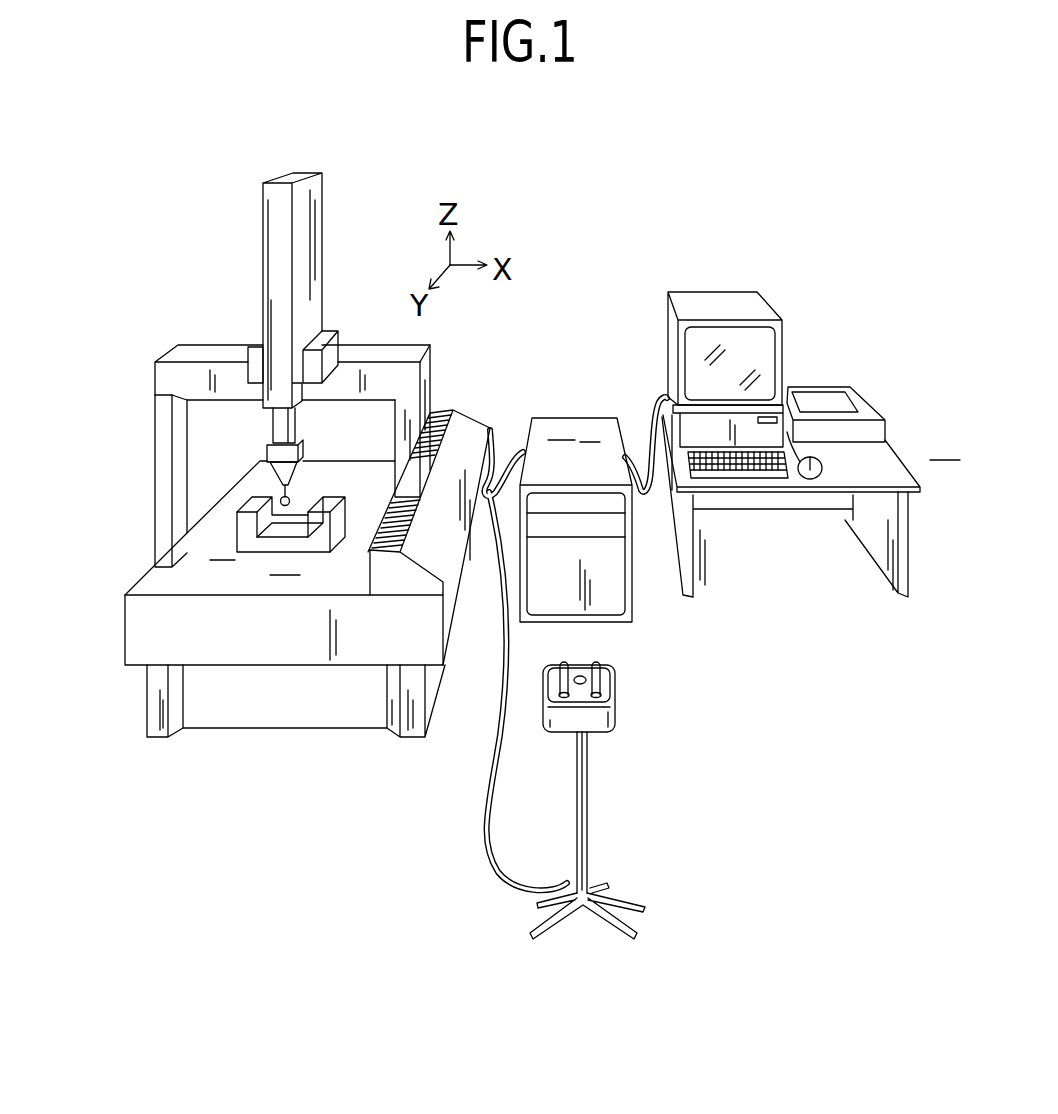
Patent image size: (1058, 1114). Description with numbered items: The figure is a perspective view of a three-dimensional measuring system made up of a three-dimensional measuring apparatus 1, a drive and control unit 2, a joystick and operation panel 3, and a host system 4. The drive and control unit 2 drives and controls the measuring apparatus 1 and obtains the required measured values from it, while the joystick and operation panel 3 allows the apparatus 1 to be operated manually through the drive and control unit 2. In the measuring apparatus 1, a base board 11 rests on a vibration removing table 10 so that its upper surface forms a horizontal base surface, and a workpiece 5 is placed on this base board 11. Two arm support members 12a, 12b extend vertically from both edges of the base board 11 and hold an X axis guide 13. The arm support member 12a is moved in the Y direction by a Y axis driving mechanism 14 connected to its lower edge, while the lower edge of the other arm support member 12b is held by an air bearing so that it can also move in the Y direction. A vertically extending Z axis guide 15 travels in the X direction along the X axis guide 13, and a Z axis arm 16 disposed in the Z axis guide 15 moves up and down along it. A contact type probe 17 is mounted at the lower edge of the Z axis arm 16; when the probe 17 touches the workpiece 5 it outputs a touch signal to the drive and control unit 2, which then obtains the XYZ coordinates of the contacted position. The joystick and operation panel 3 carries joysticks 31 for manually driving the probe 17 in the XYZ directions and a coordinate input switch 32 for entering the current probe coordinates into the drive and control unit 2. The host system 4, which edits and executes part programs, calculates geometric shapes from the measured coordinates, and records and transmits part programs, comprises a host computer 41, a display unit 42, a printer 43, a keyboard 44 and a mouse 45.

The three-dimensional measuring apparatus 1 is at (366, 205).
The drive and control unit 2 is at (572, 428).
The joystick and operation panel 3 is at (682, 710).
The host system 4 is at (818, 286).
The workpiece 5 is at (247, 540).
The vibration removing table 10 is at (158, 715).
The base board 11 is at (138, 643).
The arm support member 12a is at (428, 372).
The arm support member 12b is at (160, 477).
The X axis guide 13 is at (193, 352).
The Y axis driving mechanism 14 is at (473, 430).
The Z axis guide 15 is at (274, 250).
The Z axis arm 16 is at (297, 417).
The contact type probe 17 is at (282, 490).
The joysticks 31 is at (607, 672).
The coordinate input switch 32 is at (578, 675).
The host computer 41 is at (667, 398).
The display unit 42 is at (700, 297).
The printer 43 is at (867, 413).
The keyboard 44 is at (780, 470).
The mouse 45 is at (822, 487).